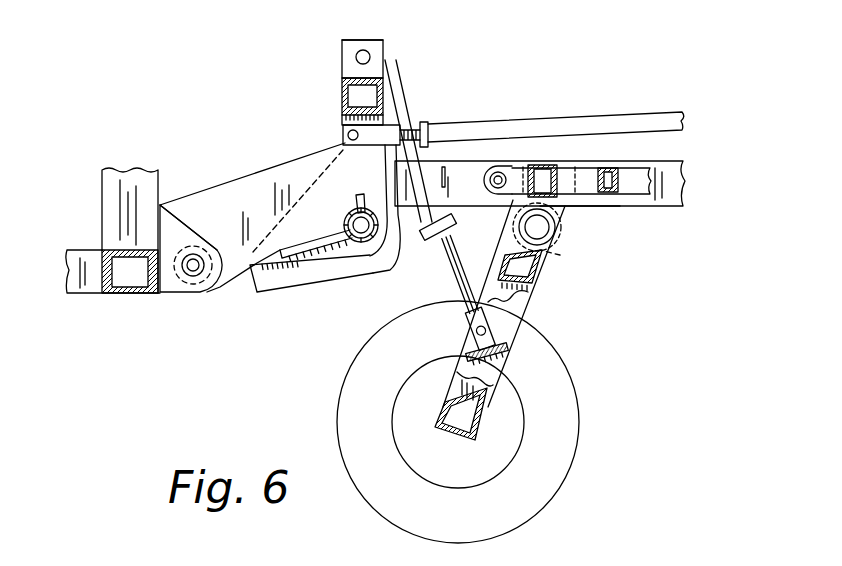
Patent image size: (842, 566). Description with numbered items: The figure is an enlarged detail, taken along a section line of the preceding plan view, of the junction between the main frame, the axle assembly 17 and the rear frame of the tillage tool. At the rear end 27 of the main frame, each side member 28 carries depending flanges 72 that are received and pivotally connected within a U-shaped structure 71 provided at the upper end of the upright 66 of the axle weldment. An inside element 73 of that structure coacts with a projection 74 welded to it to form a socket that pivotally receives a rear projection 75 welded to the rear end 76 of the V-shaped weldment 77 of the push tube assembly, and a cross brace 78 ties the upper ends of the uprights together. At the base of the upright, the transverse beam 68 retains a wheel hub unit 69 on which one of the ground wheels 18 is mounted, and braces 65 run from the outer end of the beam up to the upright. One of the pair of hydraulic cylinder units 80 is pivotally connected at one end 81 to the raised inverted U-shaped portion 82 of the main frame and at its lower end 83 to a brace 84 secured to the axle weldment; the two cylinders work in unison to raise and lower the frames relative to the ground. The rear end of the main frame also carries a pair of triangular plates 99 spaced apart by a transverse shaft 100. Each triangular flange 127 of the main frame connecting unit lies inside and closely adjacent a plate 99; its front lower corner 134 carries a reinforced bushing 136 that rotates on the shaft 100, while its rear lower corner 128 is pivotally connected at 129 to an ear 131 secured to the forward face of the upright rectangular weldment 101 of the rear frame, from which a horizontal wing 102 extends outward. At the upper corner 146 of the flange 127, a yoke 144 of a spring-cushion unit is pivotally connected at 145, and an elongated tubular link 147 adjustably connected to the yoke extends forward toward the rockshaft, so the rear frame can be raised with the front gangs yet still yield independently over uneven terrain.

The axle assembly 17 is at (602, 290).
The ground wheels 18 is at (553, 473).
The rear end 27 is at (343, 92).
The side members 28 is at (668, 197).
The braces 65 is at (513, 327).
The upright 66 is at (520, 300).
The transverse beam 68 is at (480, 428).
The wheel hub units 69 is at (403, 427).
The U-shaped structure 71 is at (560, 255).
The depending flanges 72 is at (583, 207).
The inside element 73 is at (517, 163).
The projection 74 is at (512, 213).
The rear projection 75 is at (583, 173).
The rear end 76 is at (610, 170).
The V-shaped weldment 77 is at (638, 170).
The cross brace 78 is at (545, 278).
The hydraulic cylinder units 80 is at (428, 240).
The one end 81 is at (392, 40).
The inverted U-shaped portion 82 is at (385, 58).
The lower end 83 is at (466, 333).
The brace 84 is at (505, 357).
The triangular plates 99 is at (255, 275).
The transverse shaft 100 is at (350, 237).
The rectangular weldment 101 is at (160, 170).
The wing 102 is at (87, 287).
The triangular flanges 127 is at (287, 168).
The rear lower corner 128 is at (212, 222).
The pivotal connection 129 is at (197, 297).
The ear 131 is at (173, 218).
The front lower corner 134 is at (388, 268).
The reinforced bushing 136 is at (355, 211).
The yoke 144 is at (390, 128).
The pivotal connection 145 is at (350, 133).
The upper corner 146 is at (330, 150).
The elongated tubular link 147 is at (593, 120).